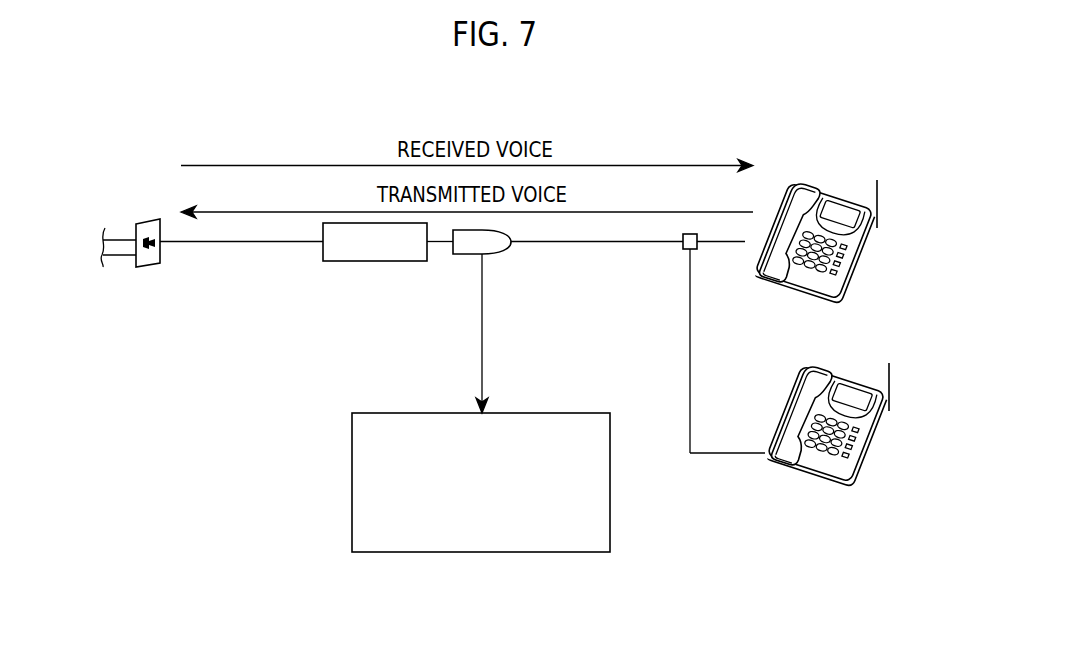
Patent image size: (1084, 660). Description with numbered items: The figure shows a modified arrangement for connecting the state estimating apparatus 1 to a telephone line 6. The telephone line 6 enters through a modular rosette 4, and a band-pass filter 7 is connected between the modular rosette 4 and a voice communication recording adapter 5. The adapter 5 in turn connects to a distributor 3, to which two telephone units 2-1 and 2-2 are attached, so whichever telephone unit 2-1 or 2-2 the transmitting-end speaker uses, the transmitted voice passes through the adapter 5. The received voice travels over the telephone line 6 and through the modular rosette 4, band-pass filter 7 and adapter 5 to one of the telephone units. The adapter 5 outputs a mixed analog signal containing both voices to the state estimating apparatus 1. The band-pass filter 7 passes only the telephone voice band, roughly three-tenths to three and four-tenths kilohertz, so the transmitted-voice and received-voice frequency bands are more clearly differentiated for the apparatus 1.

The state estimating apparatus 1 is at (612, 583).
The telephone unit 2-1 is at (771, 283).
The telephone unit 2-2 is at (783, 463).
The distributor 3 is at (683, 250).
The modular rosette 4 is at (150, 268).
The voice communication recording adapter 5 is at (463, 256).
The telephone line 6 is at (115, 258).
The band-pass filter 7 is at (343, 261).